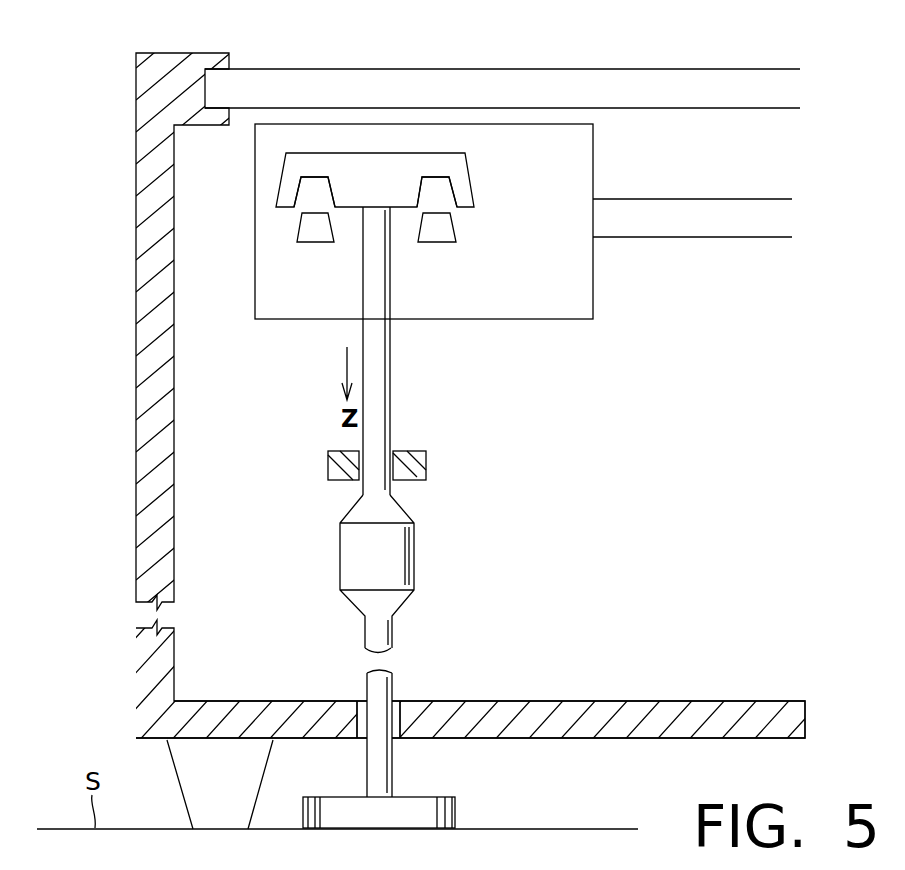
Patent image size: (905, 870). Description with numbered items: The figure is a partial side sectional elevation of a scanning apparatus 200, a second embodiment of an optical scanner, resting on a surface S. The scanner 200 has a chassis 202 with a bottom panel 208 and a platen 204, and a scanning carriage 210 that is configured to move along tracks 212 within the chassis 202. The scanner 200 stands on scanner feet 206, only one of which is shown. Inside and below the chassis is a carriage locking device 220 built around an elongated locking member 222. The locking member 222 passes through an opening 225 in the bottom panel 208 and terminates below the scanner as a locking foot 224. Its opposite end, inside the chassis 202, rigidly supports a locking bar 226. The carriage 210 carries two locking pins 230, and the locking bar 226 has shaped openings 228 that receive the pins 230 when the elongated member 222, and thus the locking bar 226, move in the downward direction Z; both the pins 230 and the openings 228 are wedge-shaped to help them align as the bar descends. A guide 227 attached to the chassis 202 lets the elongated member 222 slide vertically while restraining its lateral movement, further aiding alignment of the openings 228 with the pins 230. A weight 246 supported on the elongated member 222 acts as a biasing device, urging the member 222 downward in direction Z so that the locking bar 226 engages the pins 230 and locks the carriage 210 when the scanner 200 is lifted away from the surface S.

The scanning apparatus 200 is at (770, 29).
The chassis 202 is at (145, 340).
The platen 204 is at (660, 77).
The scanner feet 206 is at (253, 768).
The bottom panel 208 is at (610, 707).
The scanning carriage 210 is at (580, 147).
The tracks 212 is at (720, 213).
The locking device 220 is at (581, 452).
The elongated locking member 222 is at (377, 362).
The locking foot 224 is at (447, 810).
The opening 225 is at (395, 702).
The locking bar 226 is at (463, 163).
The guide 227 is at (418, 470).
The shaped openings 228 is at (318, 187).
The locking pins 230 is at (313, 238).
The weight 246 is at (350, 560).